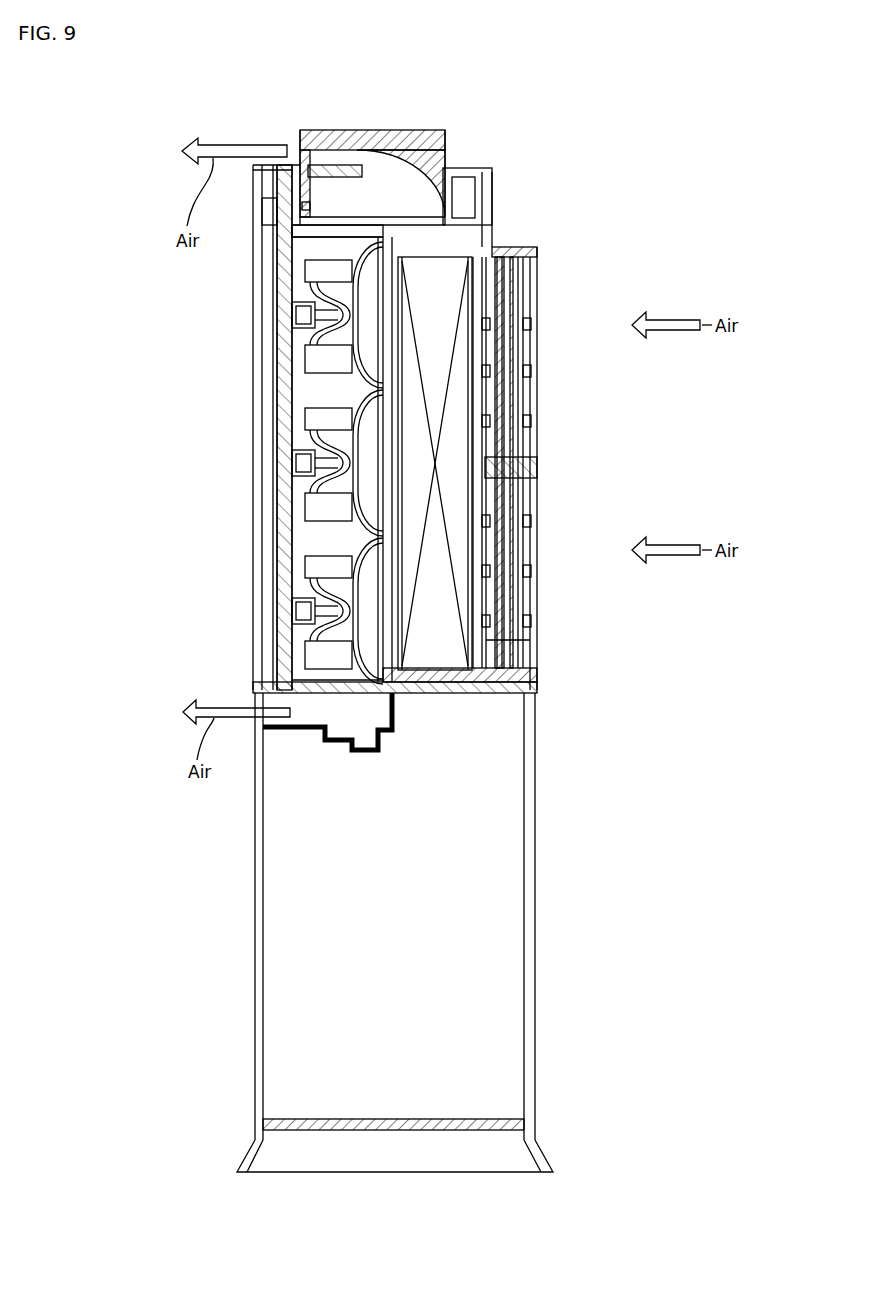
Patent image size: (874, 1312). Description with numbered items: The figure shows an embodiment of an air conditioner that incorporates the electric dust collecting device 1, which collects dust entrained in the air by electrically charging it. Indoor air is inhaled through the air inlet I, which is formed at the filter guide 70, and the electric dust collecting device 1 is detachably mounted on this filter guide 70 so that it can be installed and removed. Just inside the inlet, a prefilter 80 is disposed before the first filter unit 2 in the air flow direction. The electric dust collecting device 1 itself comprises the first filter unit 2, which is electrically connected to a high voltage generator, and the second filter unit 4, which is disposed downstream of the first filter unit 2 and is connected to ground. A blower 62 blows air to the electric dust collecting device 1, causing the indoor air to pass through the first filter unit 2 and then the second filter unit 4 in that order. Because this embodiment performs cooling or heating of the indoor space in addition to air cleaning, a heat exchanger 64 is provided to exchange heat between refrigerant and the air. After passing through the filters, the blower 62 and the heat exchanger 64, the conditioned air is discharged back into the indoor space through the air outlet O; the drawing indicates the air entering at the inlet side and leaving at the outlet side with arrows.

The electric dust collecting device 1 is at (553, 462).
The first filter unit 2 is at (522, 290).
The second filter unit 4 is at (520, 262).
The blower 62 is at (390, 438).
The heat exchanger 64 is at (432, 638).
The filter guide 70 is at (518, 247).
The prefilter 80 is at (520, 378).
The air outlet O is at (230, 97).
The air inlet I is at (533, 452).